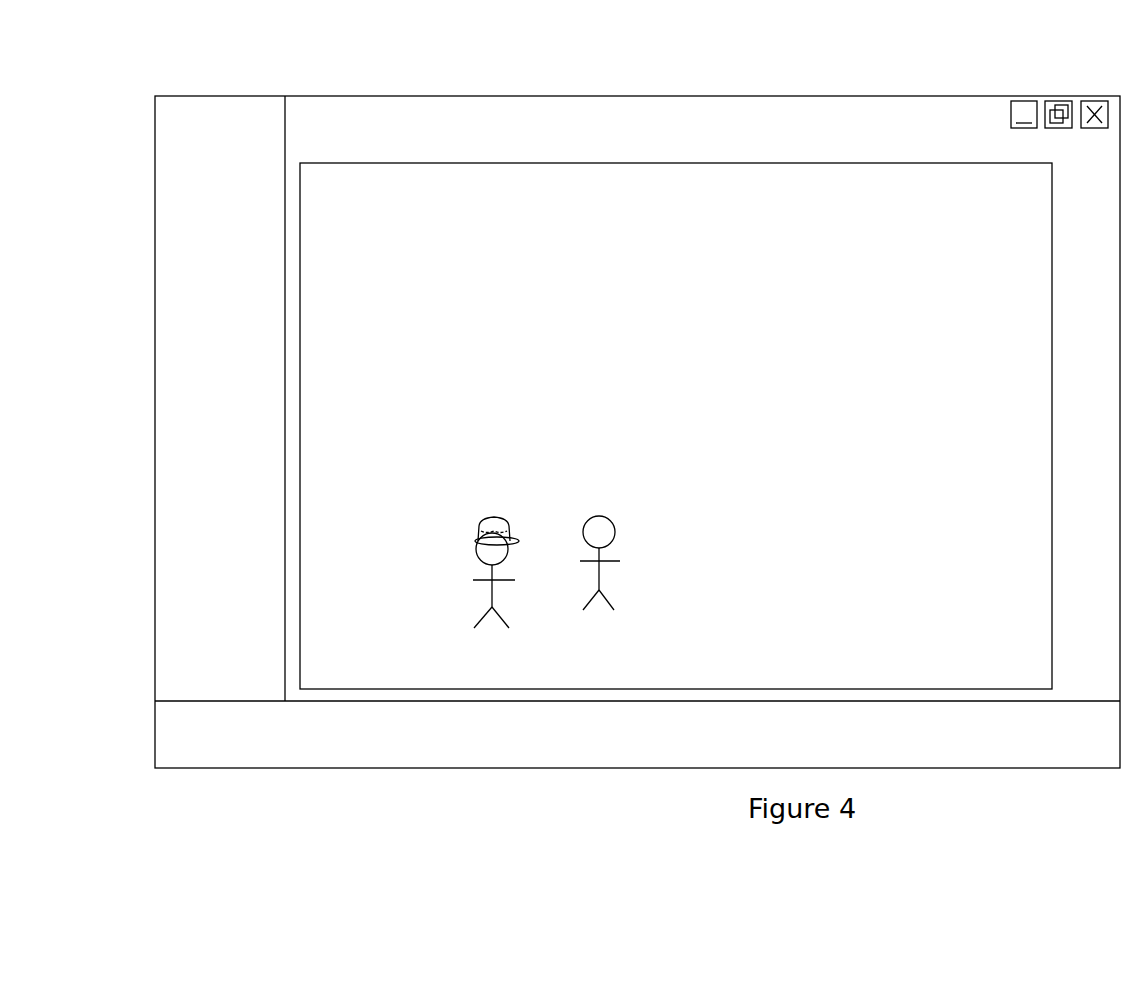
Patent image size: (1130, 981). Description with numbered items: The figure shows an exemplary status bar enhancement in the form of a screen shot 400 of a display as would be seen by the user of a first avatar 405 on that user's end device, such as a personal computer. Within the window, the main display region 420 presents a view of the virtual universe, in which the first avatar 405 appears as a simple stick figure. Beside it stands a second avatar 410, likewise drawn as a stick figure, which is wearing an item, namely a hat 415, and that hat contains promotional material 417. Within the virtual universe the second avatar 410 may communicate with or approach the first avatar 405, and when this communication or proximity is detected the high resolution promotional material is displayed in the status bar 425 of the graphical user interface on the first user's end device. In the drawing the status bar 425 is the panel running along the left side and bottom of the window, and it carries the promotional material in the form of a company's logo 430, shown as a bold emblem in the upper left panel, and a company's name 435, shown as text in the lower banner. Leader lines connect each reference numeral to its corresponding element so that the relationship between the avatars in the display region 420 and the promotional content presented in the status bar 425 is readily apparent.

The screen shot 400 is at (266, 67).
The first avatar 405 is at (601, 612).
The second avatar 410 is at (488, 633).
The hat 415 is at (519, 541).
The promotional material 417 is at (478, 530).
The virtual environment display area 420 is at (650, 163).
The status bar 425 is at (277, 461).
The company's logo 430 is at (173, 145).
The company's name 435 is at (903, 758).